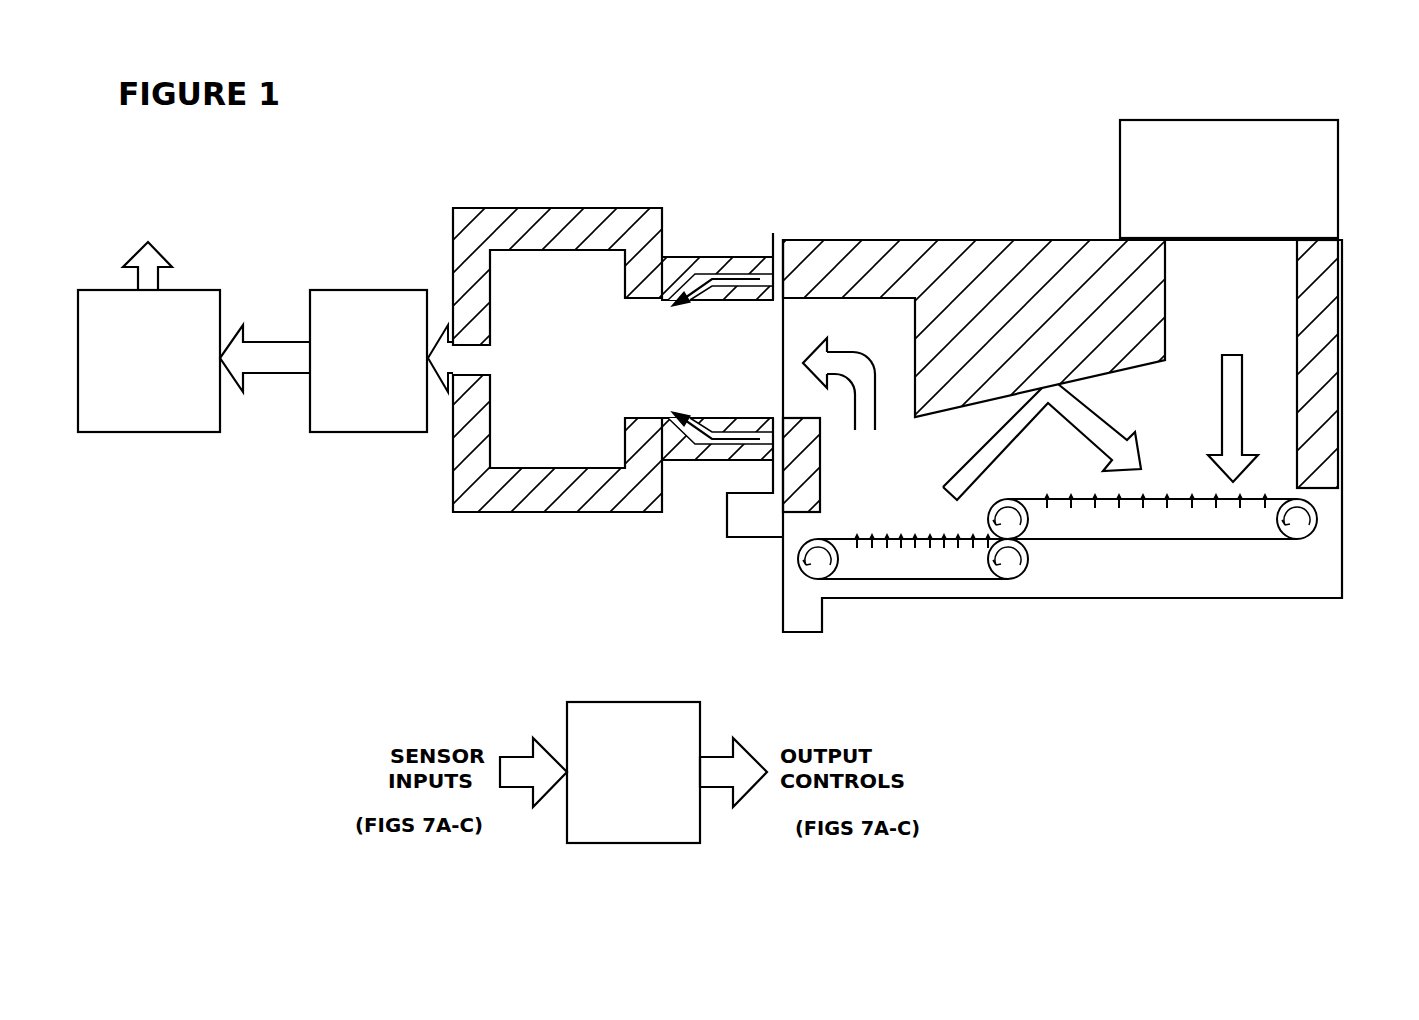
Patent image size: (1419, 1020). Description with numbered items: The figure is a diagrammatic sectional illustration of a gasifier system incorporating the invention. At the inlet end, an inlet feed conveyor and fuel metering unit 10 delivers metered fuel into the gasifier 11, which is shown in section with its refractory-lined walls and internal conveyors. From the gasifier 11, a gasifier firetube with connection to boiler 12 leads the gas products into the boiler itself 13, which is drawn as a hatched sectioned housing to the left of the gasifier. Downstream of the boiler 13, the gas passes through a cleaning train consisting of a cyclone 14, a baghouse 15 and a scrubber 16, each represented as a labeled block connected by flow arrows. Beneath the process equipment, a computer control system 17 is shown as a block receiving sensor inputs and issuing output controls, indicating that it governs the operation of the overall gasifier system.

The inlet feed conveyor and fuel metering unit 10 is at (1292, 130).
The gasifier 11 is at (661, 207).
The gasifier firetube with connection to boiler 12 is at (733, 250).
The boiler 13 is at (565, 406).
The cyclone 14 is at (368, 328).
The baghouse 15 is at (373, 298).
The scrubber 16 is at (204, 288).
The computer control system 17 is at (648, 718).